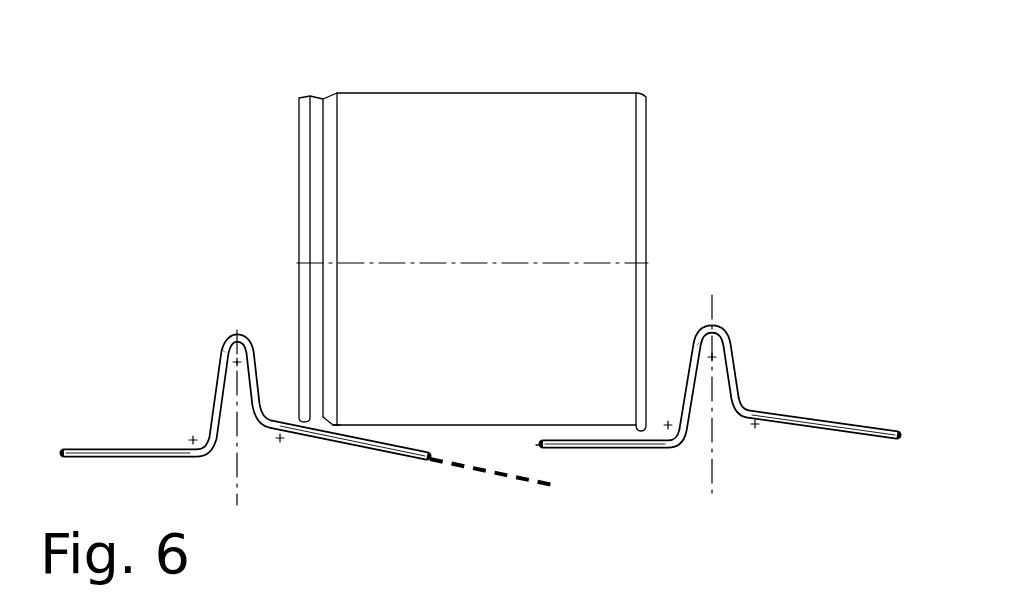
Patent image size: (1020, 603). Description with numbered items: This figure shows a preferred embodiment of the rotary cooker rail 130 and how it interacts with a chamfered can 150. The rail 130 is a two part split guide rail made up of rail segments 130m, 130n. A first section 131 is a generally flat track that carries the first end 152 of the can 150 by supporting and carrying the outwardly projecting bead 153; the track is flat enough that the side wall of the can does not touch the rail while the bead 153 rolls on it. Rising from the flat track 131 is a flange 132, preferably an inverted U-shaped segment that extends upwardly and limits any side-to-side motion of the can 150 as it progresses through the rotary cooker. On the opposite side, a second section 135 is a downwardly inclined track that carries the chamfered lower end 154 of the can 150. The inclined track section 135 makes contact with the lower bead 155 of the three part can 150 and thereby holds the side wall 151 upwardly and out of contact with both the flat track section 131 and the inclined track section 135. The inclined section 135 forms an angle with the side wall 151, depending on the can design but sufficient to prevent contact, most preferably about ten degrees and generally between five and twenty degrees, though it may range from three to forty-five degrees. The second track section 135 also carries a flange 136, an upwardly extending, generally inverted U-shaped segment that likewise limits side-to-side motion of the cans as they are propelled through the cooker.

The rotary cooker rail 130 is at (480, 423).
The rail segment 130m is at (228, 333).
The rail segment 130n is at (736, 333).
The first section 131 is at (620, 448).
The flange 132 is at (688, 358).
The second section 135 is at (365, 450).
The flange 136 is at (258, 352).
The chamfered can 150 is at (535, 252).
The side wall 151 is at (490, 425).
The first end 152 is at (617, 93).
The outwardly projecting bead 153 is at (652, 96).
The chamfered lower end 154 is at (339, 418).
The lower bead 155 is at (306, 97).